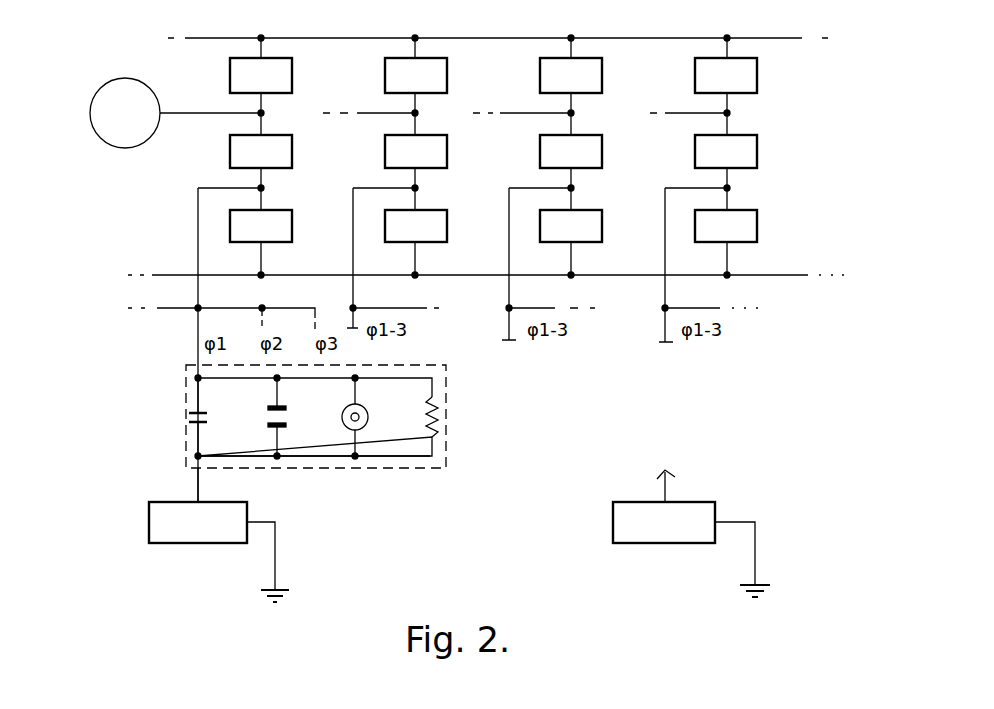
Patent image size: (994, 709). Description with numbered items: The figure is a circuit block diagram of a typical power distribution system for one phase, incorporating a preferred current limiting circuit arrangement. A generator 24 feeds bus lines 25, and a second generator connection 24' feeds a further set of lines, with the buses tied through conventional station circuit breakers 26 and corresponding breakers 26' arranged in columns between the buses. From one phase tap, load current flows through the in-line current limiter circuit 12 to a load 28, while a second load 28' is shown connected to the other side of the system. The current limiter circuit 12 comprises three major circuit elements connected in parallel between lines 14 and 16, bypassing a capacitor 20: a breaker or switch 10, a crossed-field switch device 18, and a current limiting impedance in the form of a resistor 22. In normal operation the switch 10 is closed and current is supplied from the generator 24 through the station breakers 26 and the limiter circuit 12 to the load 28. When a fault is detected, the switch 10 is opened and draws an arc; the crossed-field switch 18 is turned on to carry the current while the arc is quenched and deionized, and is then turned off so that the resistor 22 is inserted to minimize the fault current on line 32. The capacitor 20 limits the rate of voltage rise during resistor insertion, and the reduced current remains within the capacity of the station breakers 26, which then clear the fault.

The breaker 10 is at (288, 407).
The current limiter circuit 12 is at (186, 384).
The line 14 is at (410, 378).
The line 16 is at (381, 457).
The crossed-field switch tube 18 is at (367, 423).
The capacitor 20 is at (207, 419).
The resistor 22 is at (431, 406).
The generator 24 is at (175, 135).
The generator bus line 24' is at (525, 134).
The bus line 25 is at (193, 36).
The station circuit breakers 26 is at (211, 156).
The transformer unit 26' is at (764, 156).
The load 28 is at (203, 552).
The load 28' is at (691, 533).
The line 32 is at (200, 488).